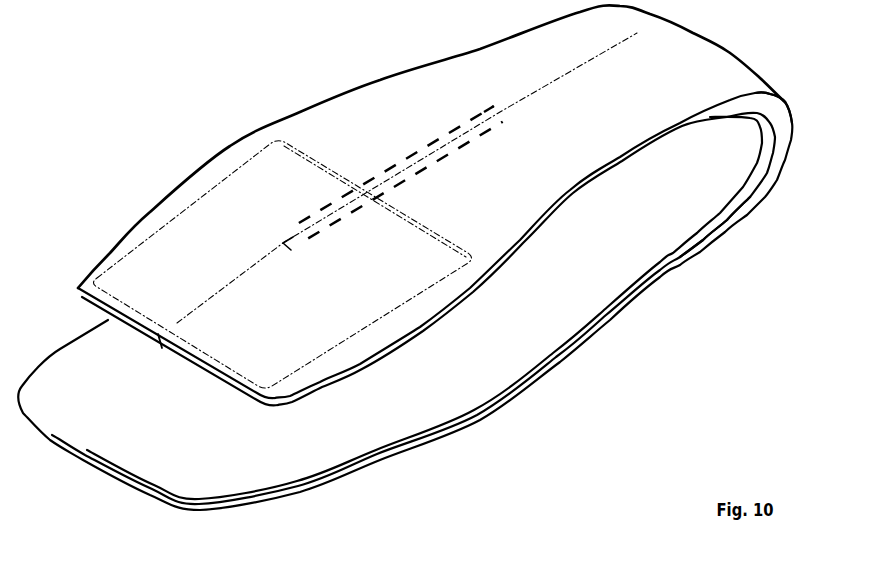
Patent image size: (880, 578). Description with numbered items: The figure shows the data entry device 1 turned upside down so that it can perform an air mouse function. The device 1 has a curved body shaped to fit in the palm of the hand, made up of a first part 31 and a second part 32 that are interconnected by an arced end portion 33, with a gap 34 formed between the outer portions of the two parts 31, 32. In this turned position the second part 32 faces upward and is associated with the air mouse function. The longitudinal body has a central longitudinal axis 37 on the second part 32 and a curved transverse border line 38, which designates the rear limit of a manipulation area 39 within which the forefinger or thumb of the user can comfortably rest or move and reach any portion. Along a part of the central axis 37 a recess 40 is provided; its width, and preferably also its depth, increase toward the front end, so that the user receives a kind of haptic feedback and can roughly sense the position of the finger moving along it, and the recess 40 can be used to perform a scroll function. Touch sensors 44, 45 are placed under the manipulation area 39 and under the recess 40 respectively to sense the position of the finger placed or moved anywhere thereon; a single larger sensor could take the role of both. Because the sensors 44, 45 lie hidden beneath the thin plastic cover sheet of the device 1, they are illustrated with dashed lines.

The data entry device 1 is at (431, 284).
The first part 31 is at (265, 480).
The second part 32 is at (290, 362).
The arced end portion 33 is at (777, 107).
The gap 34 is at (687, 200).
The central longitudinal axis 37 is at (580, 65).
The transverse border line 38 is at (403, 214).
The manipulation area 39 is at (360, 288).
The recess 40 is at (430, 142).
The touch sensor 44 is at (180, 238).
The touch sensor 45 is at (493, 108).